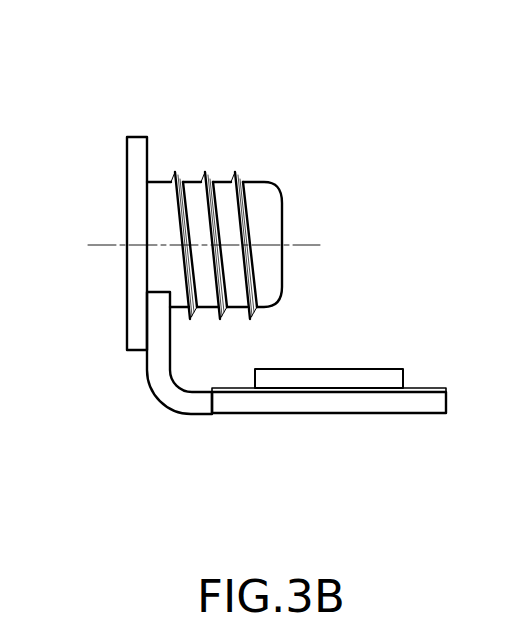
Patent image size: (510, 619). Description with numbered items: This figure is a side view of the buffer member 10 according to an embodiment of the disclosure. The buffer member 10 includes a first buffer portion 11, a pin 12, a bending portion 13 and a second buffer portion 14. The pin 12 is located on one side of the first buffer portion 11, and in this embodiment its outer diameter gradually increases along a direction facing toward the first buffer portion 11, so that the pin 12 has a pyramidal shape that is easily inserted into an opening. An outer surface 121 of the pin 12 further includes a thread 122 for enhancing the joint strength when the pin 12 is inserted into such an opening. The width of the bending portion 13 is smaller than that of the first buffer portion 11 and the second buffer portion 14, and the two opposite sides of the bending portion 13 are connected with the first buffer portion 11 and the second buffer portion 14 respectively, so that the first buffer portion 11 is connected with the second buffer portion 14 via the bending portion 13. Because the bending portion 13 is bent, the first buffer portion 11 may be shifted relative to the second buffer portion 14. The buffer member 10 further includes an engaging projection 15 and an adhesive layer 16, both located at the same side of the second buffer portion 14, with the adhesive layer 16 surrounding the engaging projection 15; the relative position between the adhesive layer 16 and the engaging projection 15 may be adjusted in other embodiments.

The buffer member 10 is at (62, 43).
The first buffer portion 11 is at (136, 137).
The pin 12 is at (217, 200).
The outer surface 121 is at (160, 180).
The thread 122 is at (204, 172).
The bending portion 13 is at (168, 395).
The second buffer portion 14 is at (363, 402).
The engaging projection 15 is at (357, 373).
The adhesive layer 16 is at (433, 387).